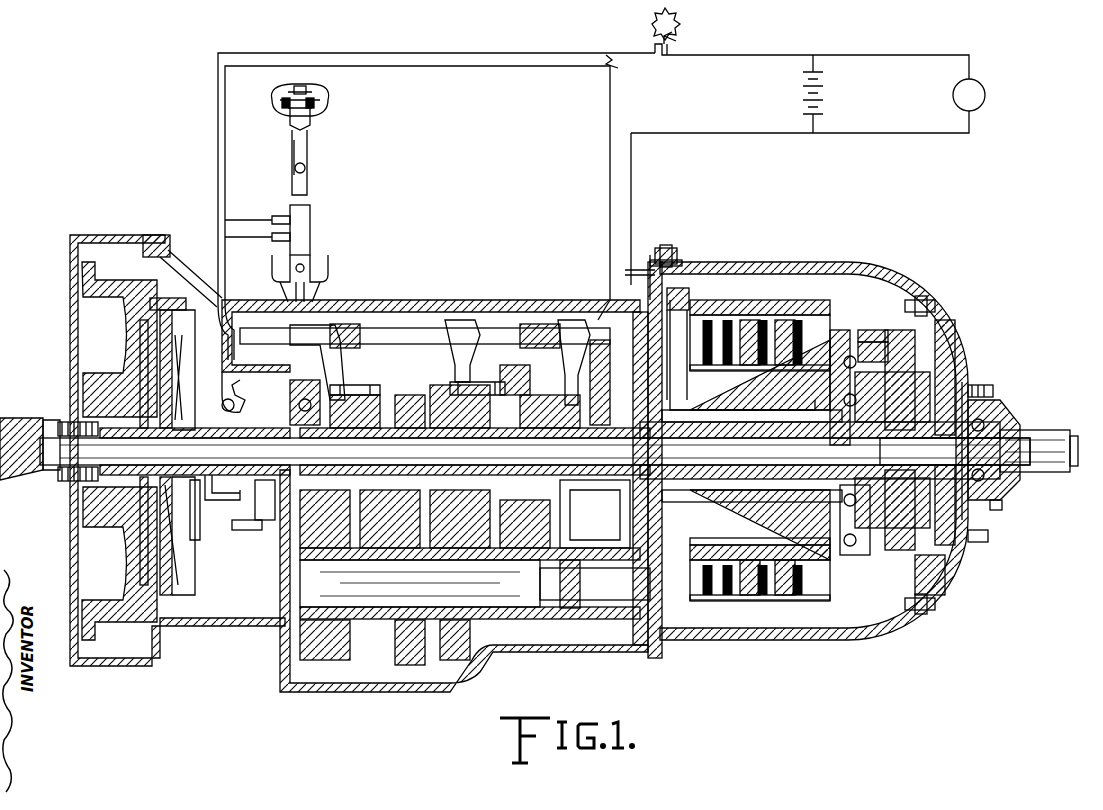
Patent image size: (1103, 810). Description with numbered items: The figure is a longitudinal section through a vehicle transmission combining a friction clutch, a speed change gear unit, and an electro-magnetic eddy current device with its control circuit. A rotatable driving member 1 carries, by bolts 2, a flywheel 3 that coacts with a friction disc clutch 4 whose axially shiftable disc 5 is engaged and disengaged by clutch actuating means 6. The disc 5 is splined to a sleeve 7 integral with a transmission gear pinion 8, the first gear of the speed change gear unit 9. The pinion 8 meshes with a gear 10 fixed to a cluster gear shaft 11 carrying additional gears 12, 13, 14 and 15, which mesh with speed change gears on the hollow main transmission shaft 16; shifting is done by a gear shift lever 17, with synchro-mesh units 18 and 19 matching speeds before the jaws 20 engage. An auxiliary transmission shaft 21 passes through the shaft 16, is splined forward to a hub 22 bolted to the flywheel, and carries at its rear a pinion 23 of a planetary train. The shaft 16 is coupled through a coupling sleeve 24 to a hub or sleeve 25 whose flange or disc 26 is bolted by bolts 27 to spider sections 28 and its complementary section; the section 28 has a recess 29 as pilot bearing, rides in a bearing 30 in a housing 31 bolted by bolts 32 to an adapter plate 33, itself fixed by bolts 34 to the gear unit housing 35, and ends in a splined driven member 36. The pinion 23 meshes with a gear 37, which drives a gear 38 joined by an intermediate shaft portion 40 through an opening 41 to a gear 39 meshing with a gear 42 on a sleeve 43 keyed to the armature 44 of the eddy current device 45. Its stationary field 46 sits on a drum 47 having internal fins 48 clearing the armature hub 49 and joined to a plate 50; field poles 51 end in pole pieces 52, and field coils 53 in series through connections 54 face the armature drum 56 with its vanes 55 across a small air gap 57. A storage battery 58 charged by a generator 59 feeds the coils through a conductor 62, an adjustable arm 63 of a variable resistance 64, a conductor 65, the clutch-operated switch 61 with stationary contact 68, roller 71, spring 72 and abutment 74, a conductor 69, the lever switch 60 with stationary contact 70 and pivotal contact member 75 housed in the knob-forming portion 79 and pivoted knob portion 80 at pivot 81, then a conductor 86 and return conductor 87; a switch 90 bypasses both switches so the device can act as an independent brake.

The driving member 1 is at (18, 418).
The bolts 2 is at (62, 422).
The flywheel 3 is at (138, 300).
The friction disc clutch 4 is at (188, 318).
The clutch disc 5 is at (140, 400).
The clutch actuating means 6 is at (240, 392).
The sleeve 7 is at (150, 440).
The transmission gear pinion 8 is at (310, 400).
The speed change gear unit 9 is at (450, 302).
The gear 10 is at (338, 530).
The cluster gear shaft 11 is at (388, 588).
The gear 12 is at (398, 520).
The gear 13 is at (455, 520).
The gear 14 is at (520, 548).
The gear 15 is at (580, 612).
The main transmission shaft 16 is at (552, 488).
The gear shift lever 17 is at (306, 228).
The synchro-mesh unit 18 is at (365, 385).
The synchro-mesh unit 19 is at (472, 380).
The jaws 20 is at (500, 372).
The auxiliary transmission shaft 21 is at (42, 482).
The hub 22 is at (100, 488).
The pinion 23 is at (857, 520).
The coupling sleeve 24 is at (700, 422).
The hub or sleeve 25 is at (708, 437).
The flange or disc 26 is at (905, 345).
The bolts 27 is at (930, 308).
The spider section 28 is at (955, 355).
The recess 29 is at (1002, 503).
The bearing 30 is at (995, 418).
The housing 31 is at (968, 360).
The bolts 32 is at (680, 262).
The adapter plate 33 is at (625, 270).
The bolts 34 is at (636, 392).
The housing 35 is at (625, 650).
The splined driven member 36 is at (1030, 440).
The gear 37 is at (915, 557).
The gear 38 is at (948, 382).
The gear 39 is at (862, 348).
The intermediate shaft portion 40 is at (885, 360).
The opening 41 is at (905, 440).
The gear 42 is at (830, 388).
The sleeve 43 is at (742, 410).
The armature 44 is at (825, 335).
The eddy current device 45 is at (798, 278).
The stationary field 46 is at (692, 562).
The stationary drum 47 is at (745, 560).
The fins 48 is at (740, 540).
The hub 49 is at (768, 405).
The plate 50 is at (697, 395).
The field poles 51 is at (722, 346).
The pole pieces 52 is at (748, 585).
The field coils 53 is at (720, 325).
The connections 54 is at (752, 300).
The fins or vanes 55 is at (770, 300).
The armature drum 56 is at (742, 320).
The air gap 57 is at (775, 320).
The storage battery 58 is at (823, 93).
The generator 59 is at (953, 100).
The switch 60 is at (322, 112).
The second switch 61 is at (248, 531).
The conductor 62 is at (765, 56).
The adjustable arm 63 is at (677, 41).
The variable resistance 64 is at (679, 24).
The conductor 65 is at (638, 53).
The stationary contact 68 is at (265, 522).
The conductor 69 is at (228, 292).
The stationary contact 70 is at (285, 112).
The roller 71 is at (223, 495).
The spring 72 is at (283, 458).
The projection 74 is at (228, 520).
The pivotal contact member 75 is at (302, 87).
The knob-forming portion 79 is at (281, 100).
The knob portion 80 is at (318, 101).
The pivot 81 is at (306, 168).
The conductor 86 is at (240, 165).
The conductor 87 is at (633, 200).
The switch 90 is at (618, 63).